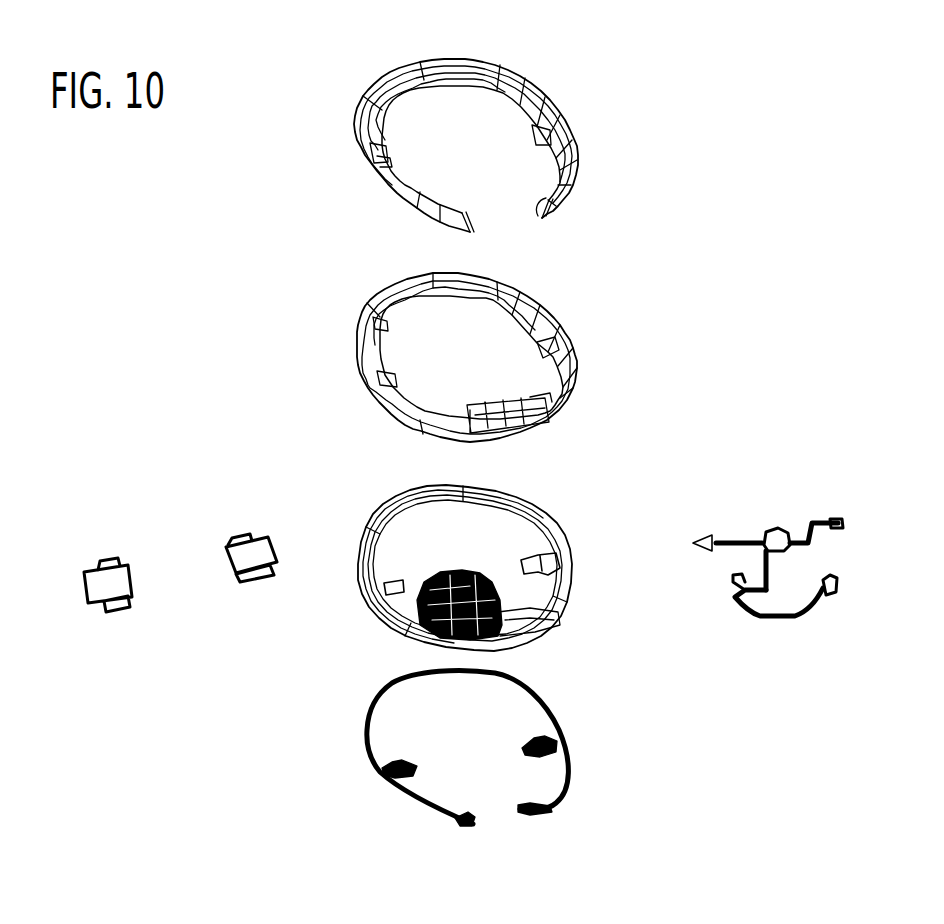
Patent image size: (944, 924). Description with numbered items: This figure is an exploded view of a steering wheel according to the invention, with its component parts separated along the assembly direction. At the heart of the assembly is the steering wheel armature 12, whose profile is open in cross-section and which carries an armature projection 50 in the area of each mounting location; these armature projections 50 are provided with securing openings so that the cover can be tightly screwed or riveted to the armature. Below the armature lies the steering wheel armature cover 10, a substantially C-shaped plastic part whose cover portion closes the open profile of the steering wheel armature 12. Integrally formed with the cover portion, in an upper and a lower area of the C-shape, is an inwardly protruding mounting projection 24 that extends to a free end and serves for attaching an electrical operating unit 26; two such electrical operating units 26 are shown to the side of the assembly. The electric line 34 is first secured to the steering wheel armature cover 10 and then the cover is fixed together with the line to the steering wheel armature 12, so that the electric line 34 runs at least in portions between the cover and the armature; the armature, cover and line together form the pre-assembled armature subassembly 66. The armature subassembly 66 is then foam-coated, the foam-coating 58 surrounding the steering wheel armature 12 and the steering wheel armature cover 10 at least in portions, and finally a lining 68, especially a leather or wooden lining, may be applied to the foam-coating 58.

The lining 68 is at (531, 96).
The foam-coating 58 is at (527, 301).
The steering wheel armature 12 is at (465, 571).
The armature projection 50 is at (547, 573).
The steering wheel armature cover 10 is at (465, 771).
The mounting projection 24 is at (542, 747).
The electrical operating unit 26 is at (260, 552).
The pre-assembled armature subassembly 66 is at (768, 549).
The electric line 34 is at (776, 620).